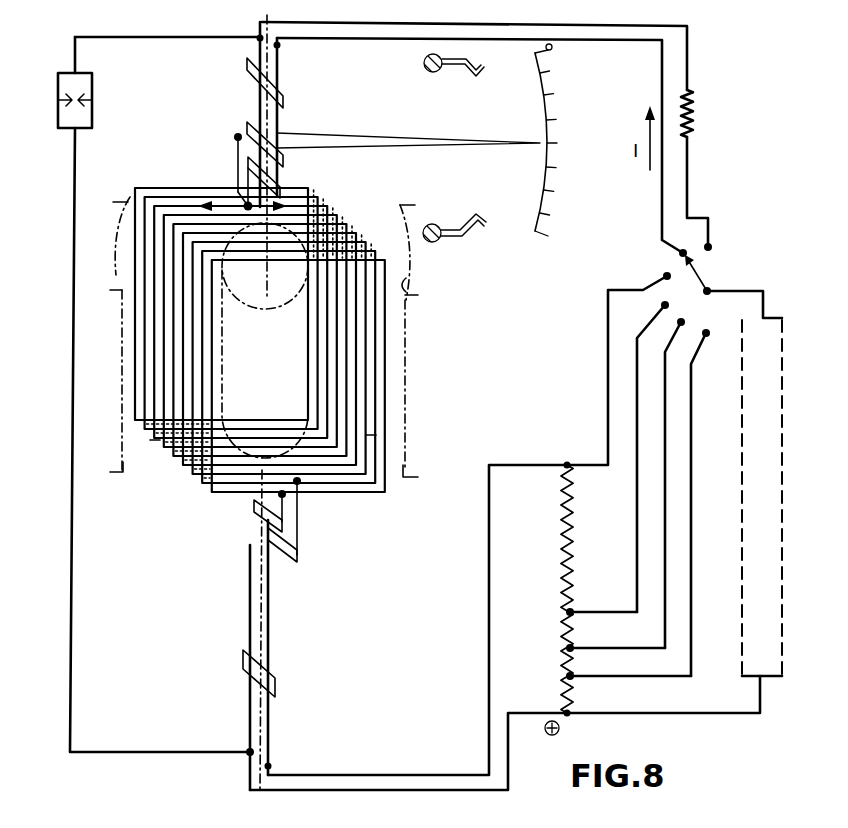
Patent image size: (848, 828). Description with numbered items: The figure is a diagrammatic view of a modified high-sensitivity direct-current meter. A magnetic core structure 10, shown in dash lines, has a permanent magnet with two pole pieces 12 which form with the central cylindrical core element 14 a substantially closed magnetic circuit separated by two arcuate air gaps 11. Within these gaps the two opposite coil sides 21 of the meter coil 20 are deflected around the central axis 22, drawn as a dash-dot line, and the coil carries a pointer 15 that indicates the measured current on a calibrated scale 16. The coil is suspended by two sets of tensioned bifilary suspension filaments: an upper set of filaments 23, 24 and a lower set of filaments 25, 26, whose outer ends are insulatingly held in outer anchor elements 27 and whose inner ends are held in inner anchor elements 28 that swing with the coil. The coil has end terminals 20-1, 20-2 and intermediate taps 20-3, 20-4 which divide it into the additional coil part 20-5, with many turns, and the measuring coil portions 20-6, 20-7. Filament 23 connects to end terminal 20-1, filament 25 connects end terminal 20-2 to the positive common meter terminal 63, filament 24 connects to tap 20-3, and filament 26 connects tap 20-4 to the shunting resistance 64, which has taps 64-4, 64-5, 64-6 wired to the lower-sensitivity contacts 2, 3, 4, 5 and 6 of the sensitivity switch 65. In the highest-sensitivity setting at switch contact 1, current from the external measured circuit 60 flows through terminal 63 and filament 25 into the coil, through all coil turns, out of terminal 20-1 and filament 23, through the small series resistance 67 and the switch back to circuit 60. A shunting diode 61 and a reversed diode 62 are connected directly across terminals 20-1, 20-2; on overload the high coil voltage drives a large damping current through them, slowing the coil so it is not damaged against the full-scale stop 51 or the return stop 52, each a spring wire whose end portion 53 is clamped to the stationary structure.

The switch contact 1 is at (712, 242).
The switch contact 2 is at (685, 245).
The switch contact 3 is at (662, 270).
The switch contact 4 is at (669, 300).
The switch contact 5 is at (685, 317).
The switch contact 6 is at (710, 328).
The magnetic core structure 10 is at (114, 195).
The air gap 11 is at (126, 220).
The pole piece 12 is at (86, 472).
The central cylindrical core element 14 is at (226, 342).
The pointer 15 is at (457, 138).
The scale 16 is at (549, 137).
The meter coil 20 is at (388, 371).
The coil end terminal 20-1 is at (236, 133).
The coil end terminal 20-2 is at (286, 518).
The intermediate coil tap 20-3 is at (244, 200).
The intermediate coil tap 20-4 is at (300, 486).
The additional coil part 20-5 is at (156, 190).
The measuring coil portion 20-6 is at (327, 224).
The measuring coil portion 20-7 is at (380, 258).
The coil side 21 is at (158, 418).
The central axis 22 is at (260, 30).
The suspension filament 23 is at (258, 52).
The suspension filament 24 is at (279, 78).
The suspension filament 25 is at (250, 622).
The suspension filament 26 is at (269, 632).
The outer anchor element 27 is at (247, 62).
The inner anchor element 28 is at (247, 126).
The full-scale stop element 51 is at (472, 224).
The return stop element 52 is at (466, 73).
The end portion of stop wire 53 is at (450, 60).
The external measured circuit 60 is at (756, 468).
The shunting diode 61 is at (91, 100).
The reversed diode 62 is at (62, 96).
The common meter terminal 63 is at (560, 728).
The shunting resistance 64 is at (590, 534).
The resistance tap 64-4 is at (575, 610).
The resistance tap 64-5 is at (590, 642).
The resistance tap 64-6 is at (592, 670).
The sensitivity switch 65 is at (700, 275).
The series resistance 67 is at (694, 108).